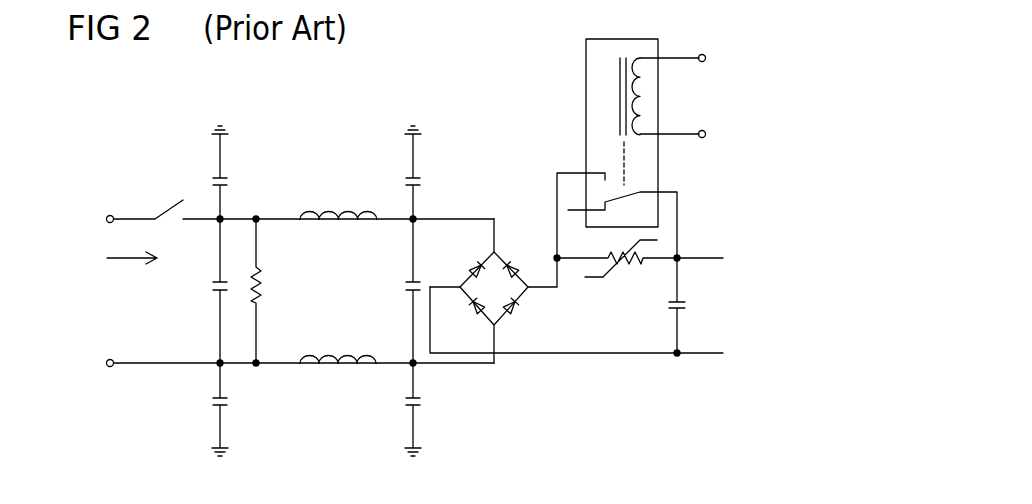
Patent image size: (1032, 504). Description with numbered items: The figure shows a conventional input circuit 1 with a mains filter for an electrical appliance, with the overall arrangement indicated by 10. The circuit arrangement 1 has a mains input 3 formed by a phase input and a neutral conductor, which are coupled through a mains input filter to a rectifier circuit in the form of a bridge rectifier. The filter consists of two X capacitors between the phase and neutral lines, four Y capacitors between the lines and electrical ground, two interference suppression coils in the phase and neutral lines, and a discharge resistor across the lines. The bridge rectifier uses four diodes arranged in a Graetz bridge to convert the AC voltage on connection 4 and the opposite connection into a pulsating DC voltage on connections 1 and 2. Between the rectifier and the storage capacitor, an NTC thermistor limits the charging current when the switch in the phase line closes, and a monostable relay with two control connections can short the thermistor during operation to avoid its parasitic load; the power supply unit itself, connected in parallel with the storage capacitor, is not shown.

The mains input 3 is at (98, 283).
The power supply circuit 10 is at (713, 391).
The input circuit 1 is at (445, 276).
The connection 2 is at (542, 272).
The connection 4 is at (502, 235).